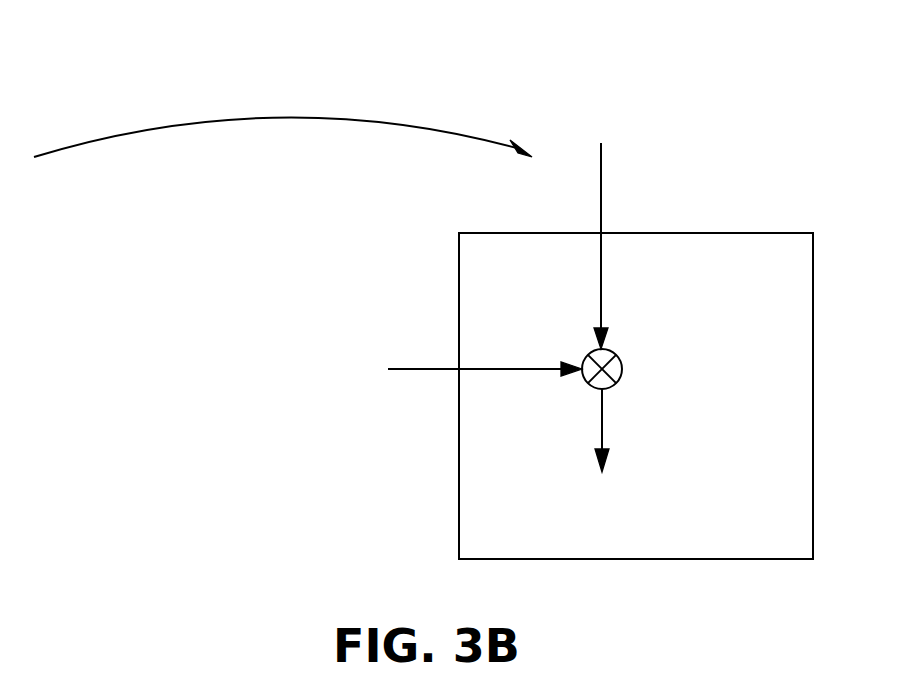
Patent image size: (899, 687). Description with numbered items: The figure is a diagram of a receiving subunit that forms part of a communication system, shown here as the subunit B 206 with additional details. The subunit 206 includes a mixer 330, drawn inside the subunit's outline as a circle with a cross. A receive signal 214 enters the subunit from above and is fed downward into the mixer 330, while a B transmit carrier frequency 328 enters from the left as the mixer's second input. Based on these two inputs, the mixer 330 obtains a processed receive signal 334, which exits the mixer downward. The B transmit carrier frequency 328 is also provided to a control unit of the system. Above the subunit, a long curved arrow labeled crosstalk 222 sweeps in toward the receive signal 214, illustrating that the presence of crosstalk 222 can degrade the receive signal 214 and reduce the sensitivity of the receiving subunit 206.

The subunit B 206 is at (636, 396).
The crosstalk 222 is at (230, 120).
The receive signal 214 is at (601, 181).
The B transmit carrier frequency 328 is at (442, 368).
The mixer 330 is at (613, 351).
The processed receive signal 334 is at (600, 420).